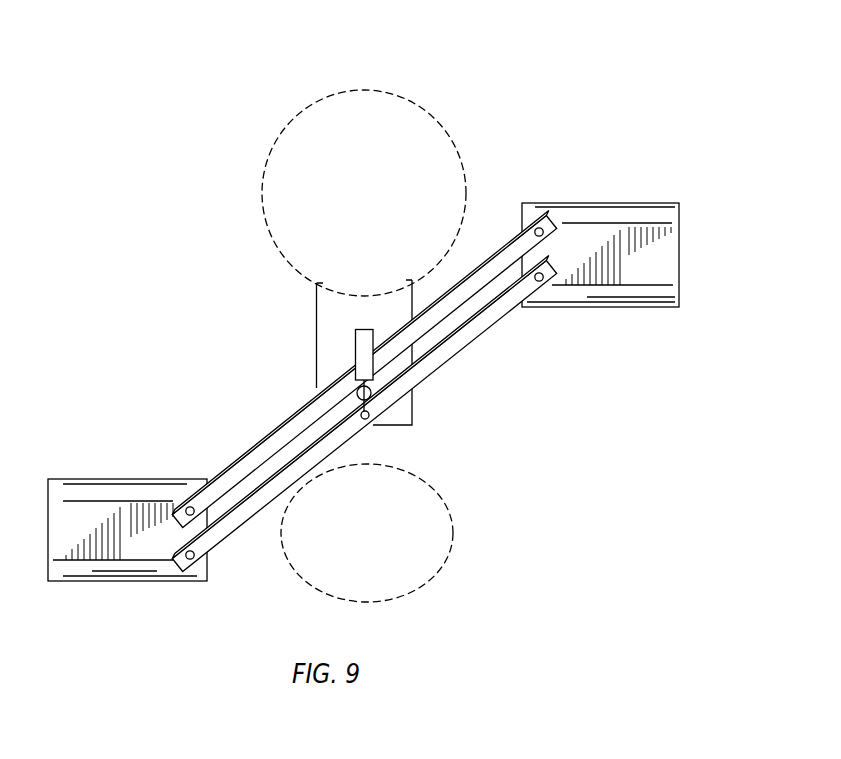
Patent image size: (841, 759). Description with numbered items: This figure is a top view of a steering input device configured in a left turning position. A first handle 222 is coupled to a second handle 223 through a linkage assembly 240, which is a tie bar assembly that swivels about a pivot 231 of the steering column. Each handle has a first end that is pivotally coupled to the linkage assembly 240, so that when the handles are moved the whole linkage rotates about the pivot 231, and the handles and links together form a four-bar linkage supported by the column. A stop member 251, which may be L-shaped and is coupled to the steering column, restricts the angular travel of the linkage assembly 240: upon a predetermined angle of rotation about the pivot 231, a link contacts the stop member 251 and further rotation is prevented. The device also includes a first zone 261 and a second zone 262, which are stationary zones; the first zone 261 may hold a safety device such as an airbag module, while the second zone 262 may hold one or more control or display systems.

The first handle 222 is at (643, 213).
The second handle 223 is at (78, 572).
The linkage assembly 240 is at (233, 448).
The stop member 251 is at (350, 328).
The pivot 231 is at (364, 420).
The first zone 261 is at (414, 566).
The second zone 262 is at (437, 162).